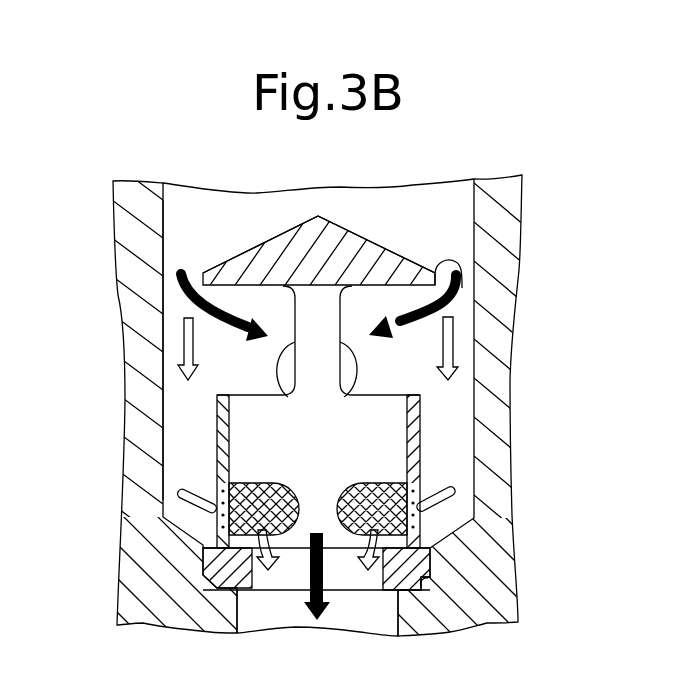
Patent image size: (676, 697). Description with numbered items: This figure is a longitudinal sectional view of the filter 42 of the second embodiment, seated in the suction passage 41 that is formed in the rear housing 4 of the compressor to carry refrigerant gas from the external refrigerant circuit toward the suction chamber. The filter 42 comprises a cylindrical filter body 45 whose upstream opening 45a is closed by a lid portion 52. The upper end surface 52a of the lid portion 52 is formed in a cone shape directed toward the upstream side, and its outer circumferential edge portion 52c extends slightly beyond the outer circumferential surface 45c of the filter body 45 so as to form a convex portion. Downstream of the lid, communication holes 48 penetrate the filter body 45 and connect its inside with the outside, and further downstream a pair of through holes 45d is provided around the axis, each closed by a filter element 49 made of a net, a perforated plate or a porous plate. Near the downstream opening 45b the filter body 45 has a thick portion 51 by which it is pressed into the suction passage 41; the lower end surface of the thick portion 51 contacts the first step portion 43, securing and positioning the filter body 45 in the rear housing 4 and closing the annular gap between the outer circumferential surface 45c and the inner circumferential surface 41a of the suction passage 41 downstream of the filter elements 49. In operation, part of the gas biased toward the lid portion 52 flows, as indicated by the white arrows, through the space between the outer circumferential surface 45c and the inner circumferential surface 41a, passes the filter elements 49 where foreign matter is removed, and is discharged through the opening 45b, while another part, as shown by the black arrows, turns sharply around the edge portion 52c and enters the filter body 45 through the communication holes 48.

The rear housing 4 is at (500, 350).
The suction passage 41 is at (462, 248).
The inner circumferential surface of the suction passage 41a is at (167, 320).
The filter 42 is at (208, 454).
The first step portion 43 is at (418, 585).
The filter body 45 is at (420, 453).
The opening 45a is at (322, 297).
The opening 45b is at (378, 565).
The outer circumferential surface of the filter body 45c is at (218, 396).
The through holes 45d is at (345, 497).
The communication holes 48 is at (340, 387).
The filter elements 49 is at (219, 492).
The thick portion 51 is at (415, 562).
The lid portion 52 is at (306, 228).
The upper end surface of the lid portion 52a is at (258, 246).
The outer circumferential edge portion 52c is at (463, 275).